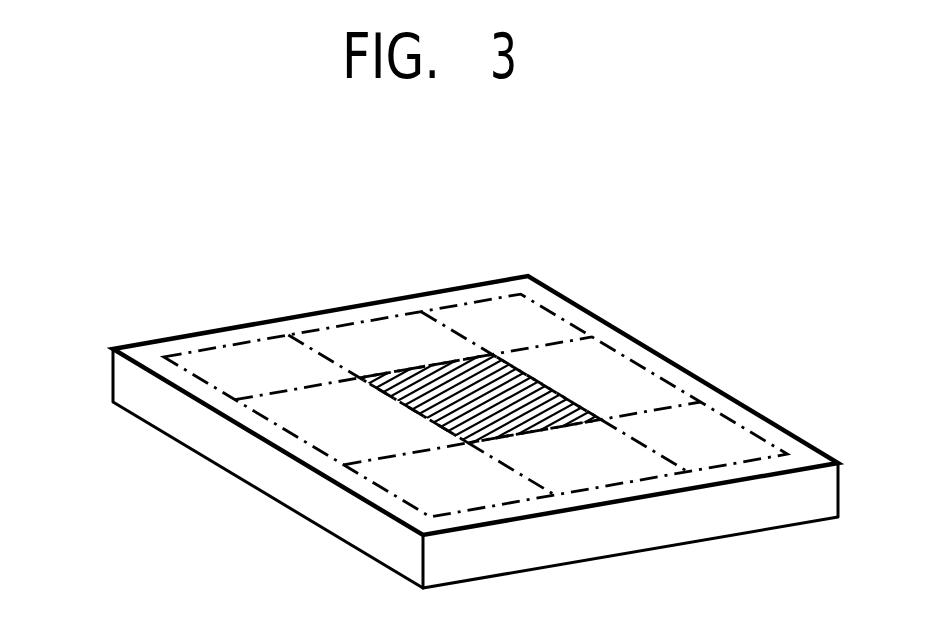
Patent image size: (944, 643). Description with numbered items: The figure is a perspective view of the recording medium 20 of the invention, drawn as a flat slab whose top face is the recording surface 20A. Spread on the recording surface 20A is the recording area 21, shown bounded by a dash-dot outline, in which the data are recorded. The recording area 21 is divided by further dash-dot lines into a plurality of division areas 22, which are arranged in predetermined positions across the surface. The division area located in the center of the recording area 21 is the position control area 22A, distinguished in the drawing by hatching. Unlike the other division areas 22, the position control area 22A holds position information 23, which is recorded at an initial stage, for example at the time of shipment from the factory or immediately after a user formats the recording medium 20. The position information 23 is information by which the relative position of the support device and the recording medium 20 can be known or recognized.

The recording medium 20 is at (818, 440).
The recording surface 20A is at (720, 436).
The recording area 21 is at (215, 339).
The division areas 22 is at (213, 378).
The position control area 22A is at (447, 398).
The position information 23 is at (523, 378).